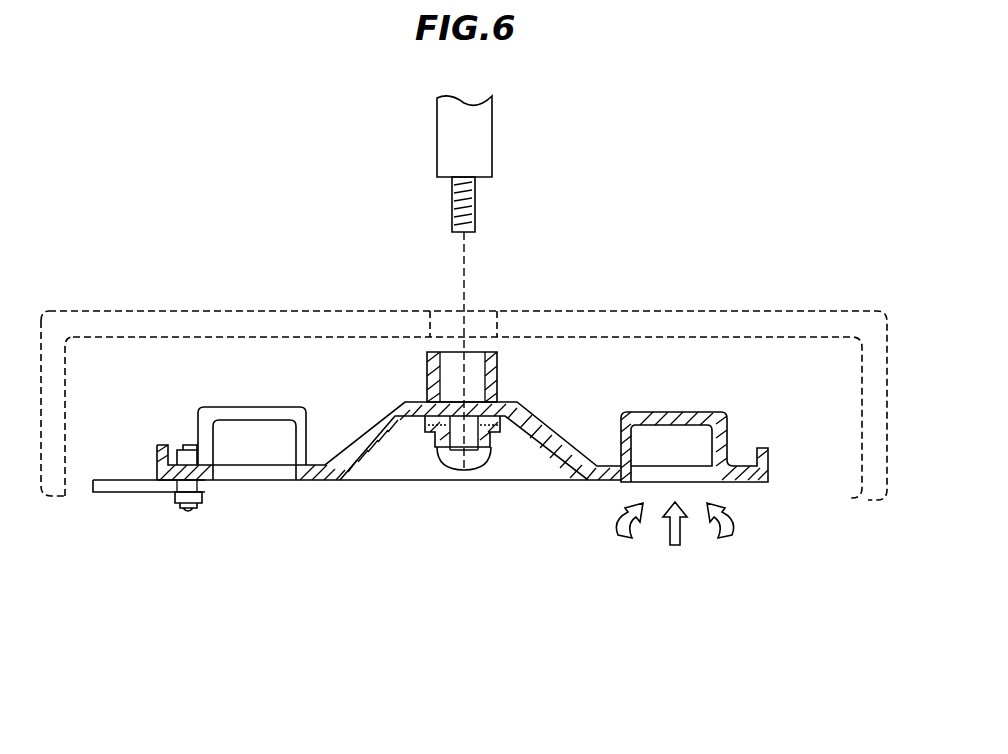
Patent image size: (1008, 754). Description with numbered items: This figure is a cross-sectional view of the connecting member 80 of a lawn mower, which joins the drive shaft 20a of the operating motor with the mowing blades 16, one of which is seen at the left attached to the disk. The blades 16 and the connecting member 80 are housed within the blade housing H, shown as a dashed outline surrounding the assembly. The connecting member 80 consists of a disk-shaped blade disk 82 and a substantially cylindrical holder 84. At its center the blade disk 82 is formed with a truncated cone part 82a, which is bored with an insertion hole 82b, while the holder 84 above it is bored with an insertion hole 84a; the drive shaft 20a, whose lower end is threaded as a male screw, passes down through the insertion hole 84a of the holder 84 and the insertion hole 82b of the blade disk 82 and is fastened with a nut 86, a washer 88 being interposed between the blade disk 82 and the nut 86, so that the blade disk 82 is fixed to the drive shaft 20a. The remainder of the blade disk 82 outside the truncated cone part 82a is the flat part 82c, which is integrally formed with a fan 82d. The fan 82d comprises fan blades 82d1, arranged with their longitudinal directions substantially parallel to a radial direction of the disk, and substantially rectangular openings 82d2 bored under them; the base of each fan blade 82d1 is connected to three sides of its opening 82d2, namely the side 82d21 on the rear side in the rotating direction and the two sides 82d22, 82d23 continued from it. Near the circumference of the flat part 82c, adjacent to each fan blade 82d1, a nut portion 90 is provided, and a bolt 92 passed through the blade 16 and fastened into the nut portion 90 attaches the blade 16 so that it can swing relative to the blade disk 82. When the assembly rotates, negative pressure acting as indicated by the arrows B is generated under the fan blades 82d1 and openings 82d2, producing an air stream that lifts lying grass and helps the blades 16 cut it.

The drive shaft 20a is at (492, 137).
The insertion hole 84a is at (472, 400).
The blade housing H is at (680, 312).
The holder 84 is at (497, 386).
The connecting member 80 is at (535, 403).
The truncated cone part 82a is at (600, 462).
The blade disk 82 is at (553, 425).
The flat part 82c is at (598, 483).
The fan 82d is at (287, 401).
The fan blade 82d1 is at (257, 410).
The opening 82d2 is at (266, 483).
The side 82d21 is at (243, 483).
The side 82d22 is at (219, 483).
The side 82d23 is at (292, 485).
The nut portion 90 is at (186, 448).
The bolt 92 is at (185, 512).
The blade 16 is at (124, 494).
The washer 88 is at (424, 420).
The insertion hole 82b is at (478, 442).
The nut 86 is at (450, 462).
The arrows indicating negative pressure B is at (710, 545).